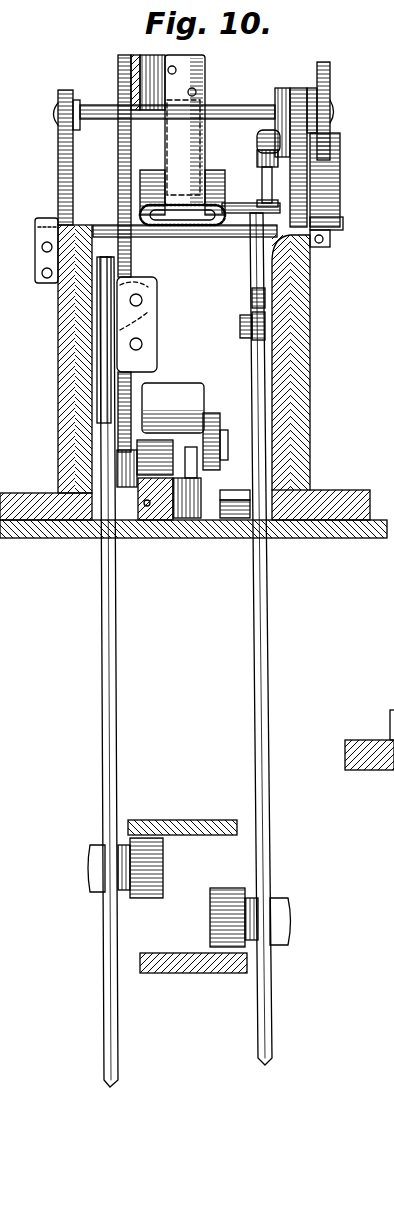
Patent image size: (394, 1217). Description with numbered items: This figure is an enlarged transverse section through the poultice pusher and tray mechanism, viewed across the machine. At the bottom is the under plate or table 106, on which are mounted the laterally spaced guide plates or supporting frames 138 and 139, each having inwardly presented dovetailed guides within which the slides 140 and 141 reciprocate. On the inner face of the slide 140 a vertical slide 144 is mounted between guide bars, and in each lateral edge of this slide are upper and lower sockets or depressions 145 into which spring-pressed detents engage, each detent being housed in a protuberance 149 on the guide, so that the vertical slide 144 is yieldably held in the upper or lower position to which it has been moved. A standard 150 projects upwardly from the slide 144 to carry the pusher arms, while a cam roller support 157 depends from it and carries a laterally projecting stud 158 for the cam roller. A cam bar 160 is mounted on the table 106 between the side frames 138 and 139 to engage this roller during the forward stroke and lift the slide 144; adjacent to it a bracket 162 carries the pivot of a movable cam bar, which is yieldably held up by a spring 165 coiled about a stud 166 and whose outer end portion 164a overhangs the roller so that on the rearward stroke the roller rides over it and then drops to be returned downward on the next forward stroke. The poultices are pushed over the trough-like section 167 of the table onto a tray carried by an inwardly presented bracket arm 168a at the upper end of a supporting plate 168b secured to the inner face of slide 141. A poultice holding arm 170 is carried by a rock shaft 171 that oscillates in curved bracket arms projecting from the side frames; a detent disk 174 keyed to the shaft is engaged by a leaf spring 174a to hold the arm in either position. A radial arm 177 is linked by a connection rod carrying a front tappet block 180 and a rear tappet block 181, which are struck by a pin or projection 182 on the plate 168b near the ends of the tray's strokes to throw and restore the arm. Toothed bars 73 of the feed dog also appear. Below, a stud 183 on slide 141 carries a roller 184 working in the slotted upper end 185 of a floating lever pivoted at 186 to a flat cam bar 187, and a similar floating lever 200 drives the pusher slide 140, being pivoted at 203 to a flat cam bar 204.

The toothed bars 73 is at (142, 187).
The under plate or table 106 is at (175, 522).
The guide plate or supporting frame 138 is at (62, 443).
The guide plate or supporting frame 139 is at (295, 428).
The slide 140 is at (78, 365).
The slide 141 is at (288, 348).
The vertical slide 144 is at (100, 332).
The sockets or depressions 145 is at (138, 344).
The protuberance 149 is at (146, 293).
The standard 150 is at (120, 135).
The cam roller support 157 is at (125, 478).
The stud 158 is at (160, 462).
The cam bar 160 is at (152, 508).
The bracket 162 is at (213, 430).
The outer end portion 164a is at (168, 392).
The spring 165 is at (190, 505).
The stud 166 is at (218, 492).
The trough-like section 167 is at (186, 228).
The bracket arm 168a is at (238, 210).
The supporting plate 168b is at (252, 278).
The poultice holding arm 170 is at (170, 133).
The rock shaft 171 is at (215, 112).
The detent disk 174 is at (330, 68).
The leaf spring 174a is at (328, 170).
The radial arm 177 is at (280, 105).
The front tappet block 180 is at (258, 166).
The rear tappet block 181 is at (262, 128).
The pin or projection 182 is at (266, 185).
The stud 183 is at (245, 330).
The roller 184 is at (268, 323).
The slotted upper end 185 is at (262, 297).
The pivotal connection 186 is at (292, 920).
The flat cam bar 187 is at (192, 975).
The floating lever 200 is at (115, 752).
The pivotal connection 203 is at (165, 868).
The flat cam bar 204 is at (178, 818).